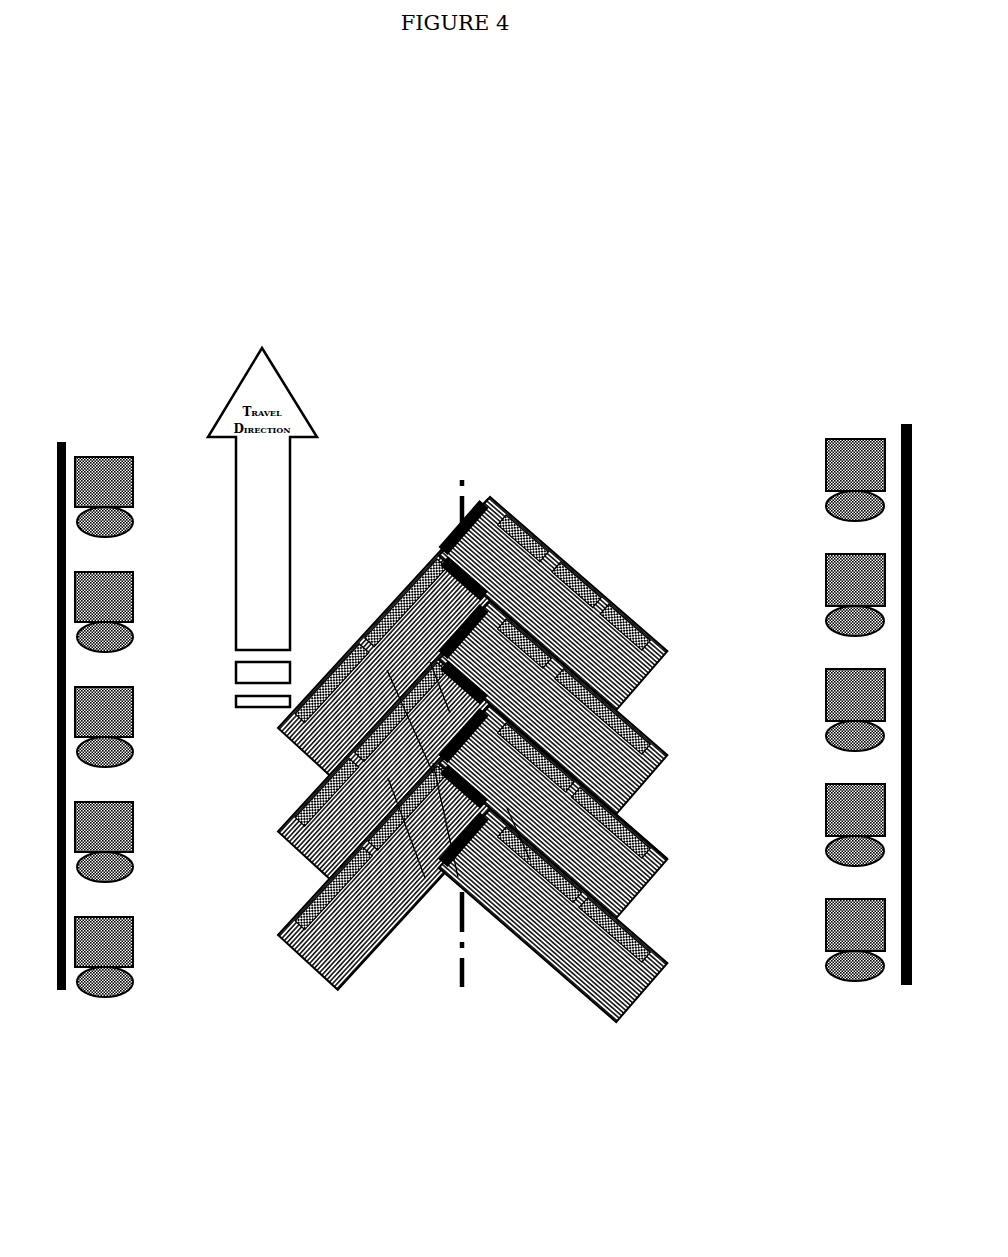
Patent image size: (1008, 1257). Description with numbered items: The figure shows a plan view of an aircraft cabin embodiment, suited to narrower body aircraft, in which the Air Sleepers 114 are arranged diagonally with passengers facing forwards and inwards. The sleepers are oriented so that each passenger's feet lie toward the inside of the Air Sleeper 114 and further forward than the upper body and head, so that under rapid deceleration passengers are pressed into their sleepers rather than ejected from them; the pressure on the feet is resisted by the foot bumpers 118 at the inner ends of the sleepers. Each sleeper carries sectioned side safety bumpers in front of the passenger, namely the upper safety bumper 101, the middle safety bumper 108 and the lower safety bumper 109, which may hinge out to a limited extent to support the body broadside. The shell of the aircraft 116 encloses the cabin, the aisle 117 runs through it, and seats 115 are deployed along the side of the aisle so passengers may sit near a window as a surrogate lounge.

The upper safety bumper 101 is at (560, 831).
The middle safety bumper 108 is at (517, 778).
The lower safety bumper 109 is at (520, 750).
The air sleeper 114 is at (567, 813).
The seat 115 is at (840, 470).
The shell of the aircraft 116 is at (900, 975).
The aisle 117 is at (207, 812).
The foot bumper 118 is at (470, 573).